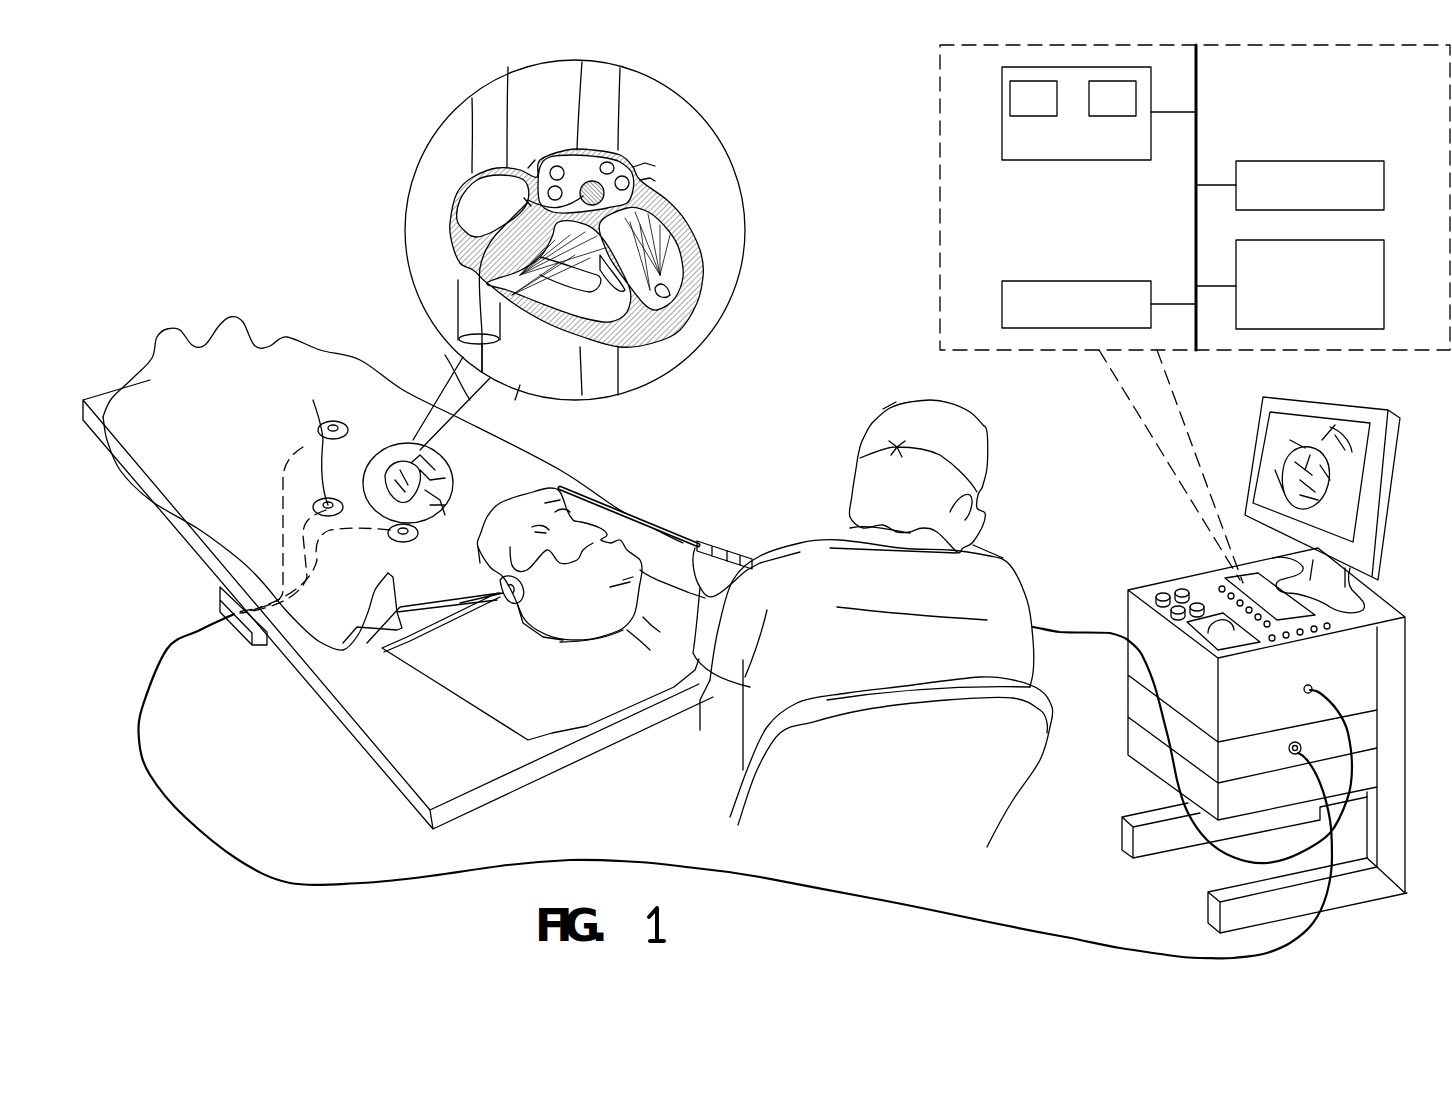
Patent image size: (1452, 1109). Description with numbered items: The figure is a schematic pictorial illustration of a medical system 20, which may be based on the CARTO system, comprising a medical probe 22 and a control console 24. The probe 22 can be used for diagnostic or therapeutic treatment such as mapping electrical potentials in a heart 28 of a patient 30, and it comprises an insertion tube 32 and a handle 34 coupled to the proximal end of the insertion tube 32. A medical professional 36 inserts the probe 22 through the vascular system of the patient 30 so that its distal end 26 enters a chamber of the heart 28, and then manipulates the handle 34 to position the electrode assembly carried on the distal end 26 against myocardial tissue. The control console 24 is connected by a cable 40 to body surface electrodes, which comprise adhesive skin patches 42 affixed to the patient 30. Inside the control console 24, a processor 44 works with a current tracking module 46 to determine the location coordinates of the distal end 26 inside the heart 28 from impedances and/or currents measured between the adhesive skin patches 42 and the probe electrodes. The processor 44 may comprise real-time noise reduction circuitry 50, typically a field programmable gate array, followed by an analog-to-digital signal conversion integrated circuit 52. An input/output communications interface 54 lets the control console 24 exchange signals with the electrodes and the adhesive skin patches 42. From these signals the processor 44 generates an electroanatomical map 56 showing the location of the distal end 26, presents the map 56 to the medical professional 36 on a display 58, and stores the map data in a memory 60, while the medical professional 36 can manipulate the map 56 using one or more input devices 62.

The medical system 20 is at (842, 388).
The medical probe 22 is at (642, 473).
The control console 24 is at (1385, 608).
The distal end 26 is at (602, 203).
The heart 28 is at (690, 257).
The patient 30 is at (535, 623).
The insertion tube 32 is at (470, 230).
The handle 34 is at (740, 530).
The medical professional 36 is at (1000, 572).
The cable 40 is at (617, 859).
The adhesive skin patches 42 is at (390, 545).
The processor 44 is at (1002, 130).
The current tracking module 46 is at (1384, 286).
The real-time noise reduction circuitry 50 is at (1045, 111).
The analog-to-digital signal conversion integrated circuit 52 is at (1125, 111).
The input/output communications interface 54 is at (1384, 185).
The electroanatomical map 56 is at (1347, 457).
The display 58 is at (1387, 492).
The memory 60 is at (1002, 306).
The input devices 62 is at (1180, 585).